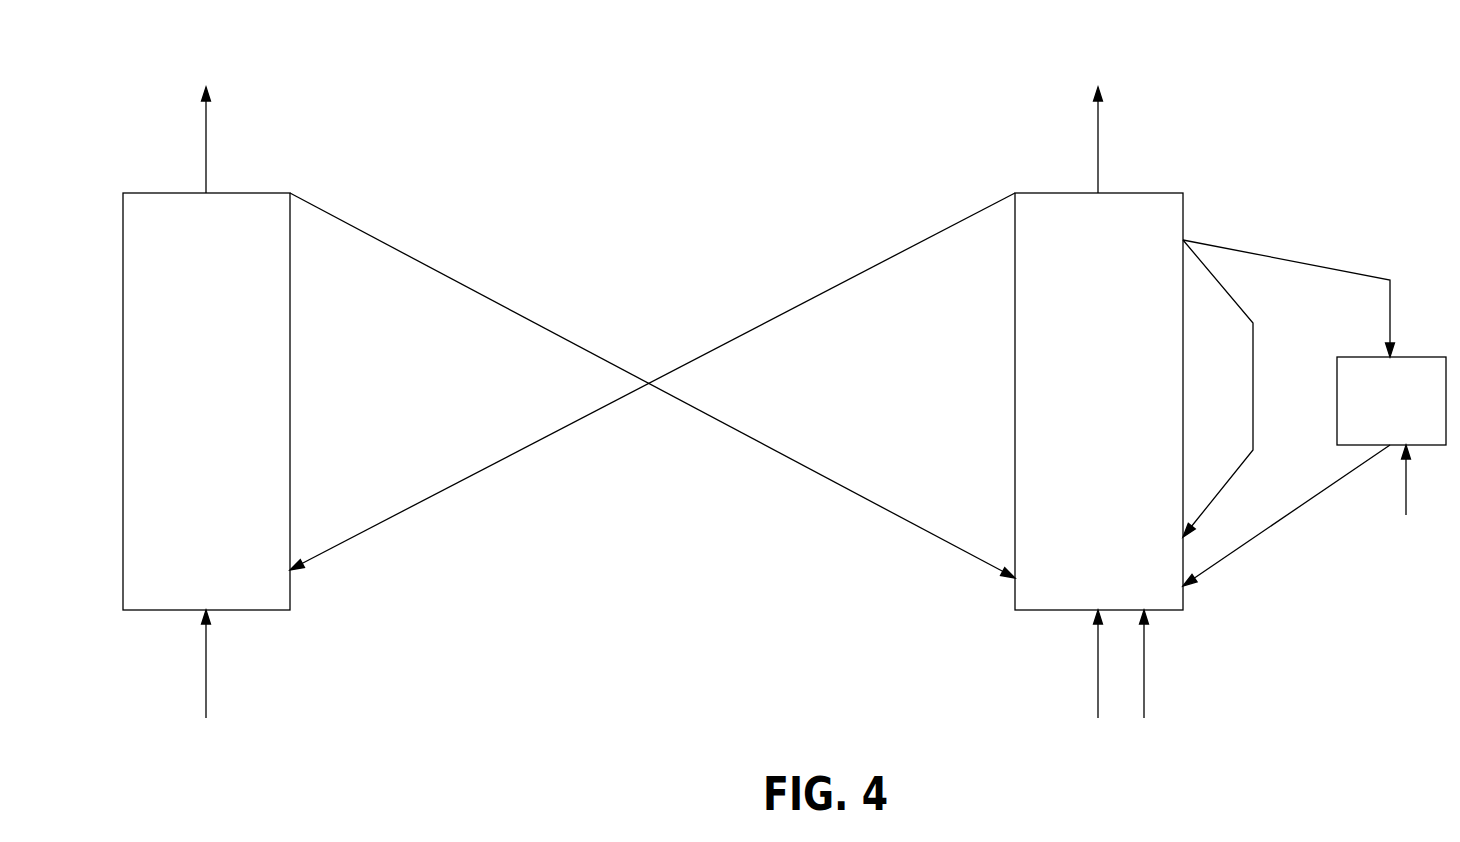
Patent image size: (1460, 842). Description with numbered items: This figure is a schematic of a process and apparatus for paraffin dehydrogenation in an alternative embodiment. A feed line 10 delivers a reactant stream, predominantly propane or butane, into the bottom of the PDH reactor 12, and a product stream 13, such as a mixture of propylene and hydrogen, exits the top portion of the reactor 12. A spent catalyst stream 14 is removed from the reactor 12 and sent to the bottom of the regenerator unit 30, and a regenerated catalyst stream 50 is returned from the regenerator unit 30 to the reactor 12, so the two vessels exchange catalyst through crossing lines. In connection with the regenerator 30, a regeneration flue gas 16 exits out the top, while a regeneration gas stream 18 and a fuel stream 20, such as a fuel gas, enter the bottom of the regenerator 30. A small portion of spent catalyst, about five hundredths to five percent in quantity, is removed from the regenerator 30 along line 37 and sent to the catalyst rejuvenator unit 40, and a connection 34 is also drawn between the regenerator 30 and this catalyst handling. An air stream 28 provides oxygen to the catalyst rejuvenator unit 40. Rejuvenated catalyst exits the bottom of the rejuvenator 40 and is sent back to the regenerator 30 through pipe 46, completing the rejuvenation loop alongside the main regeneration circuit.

The feed line 10 is at (206, 663).
The PDH reactor 12 is at (138, 193).
The product stream 13 is at (206, 139).
The spent catalyst stream 14 is at (467, 287).
The regeneration flue gas 16 is at (1098, 139).
The regeneration gas stream 18 is at (1098, 662).
The fuel stream 20 is at (1144, 662).
The air stream 28 is at (1406, 498).
The regenerator unit 30 is at (1183, 193).
The recycle stream 34 is at (1250, 318).
The side stream 37 is at (1288, 260).
The catalyst rejuvenator unit 40 is at (1352, 357).
The pipe 46 is at (1290, 515).
The regenerated catalyst stream 50 is at (826, 290).